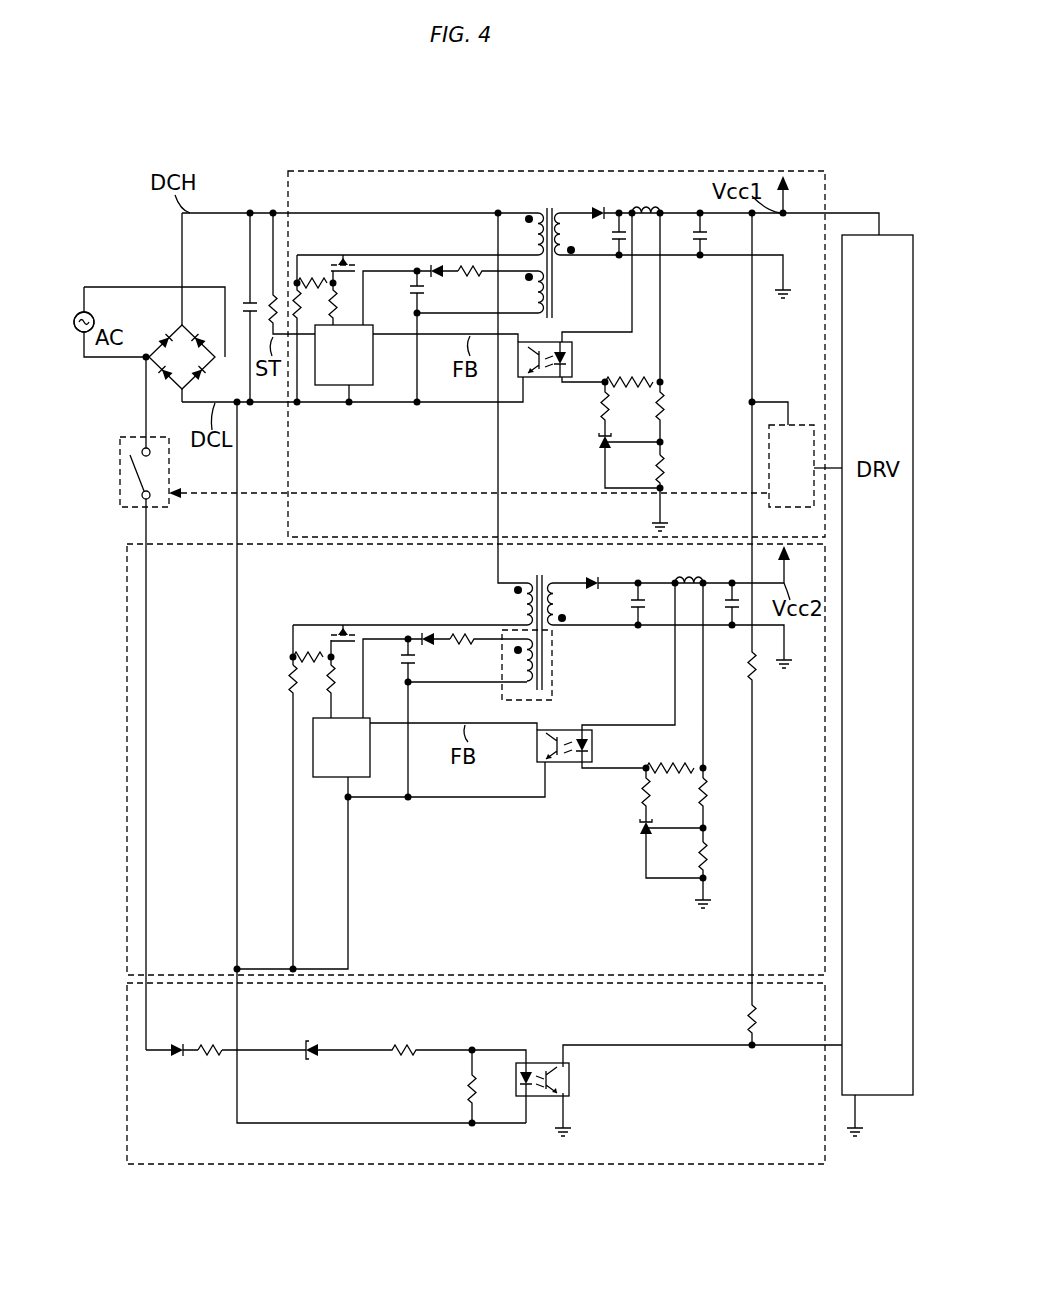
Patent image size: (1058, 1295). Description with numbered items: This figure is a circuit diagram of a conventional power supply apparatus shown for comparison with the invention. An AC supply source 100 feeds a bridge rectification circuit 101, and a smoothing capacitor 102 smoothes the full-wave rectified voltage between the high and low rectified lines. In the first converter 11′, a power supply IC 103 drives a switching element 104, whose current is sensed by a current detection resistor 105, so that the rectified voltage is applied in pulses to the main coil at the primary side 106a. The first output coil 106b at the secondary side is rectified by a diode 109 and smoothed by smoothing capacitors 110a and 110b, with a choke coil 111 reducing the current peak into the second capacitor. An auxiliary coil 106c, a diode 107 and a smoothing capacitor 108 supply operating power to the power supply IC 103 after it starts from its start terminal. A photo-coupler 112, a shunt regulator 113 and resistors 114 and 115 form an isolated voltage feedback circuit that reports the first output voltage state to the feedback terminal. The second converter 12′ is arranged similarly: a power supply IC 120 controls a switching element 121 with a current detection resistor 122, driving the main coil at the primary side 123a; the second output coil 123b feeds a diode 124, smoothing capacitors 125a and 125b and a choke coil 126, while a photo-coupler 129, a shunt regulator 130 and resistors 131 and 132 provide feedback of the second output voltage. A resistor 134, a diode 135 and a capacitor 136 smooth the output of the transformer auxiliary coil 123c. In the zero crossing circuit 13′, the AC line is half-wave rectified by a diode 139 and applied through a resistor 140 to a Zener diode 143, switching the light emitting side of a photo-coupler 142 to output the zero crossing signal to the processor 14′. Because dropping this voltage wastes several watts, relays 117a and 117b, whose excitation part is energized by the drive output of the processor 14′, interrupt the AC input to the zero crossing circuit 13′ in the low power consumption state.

The AC supply source 100 is at (92, 318).
The bridge rectification circuit 101 is at (178, 352).
The smoothing capacitor 102 is at (245, 305).
The power supply IC 103 is at (328, 385).
The switching element 104 is at (343, 255).
The current detection resistor 105 is at (297, 293).
The main coil at the primary side 106a is at (530, 235).
The Vcc1 output coil 106b is at (563, 218).
The auxiliary coil 106c is at (530, 300).
The diode 107 is at (435, 265).
The smoothing capacitor 108 is at (415, 285).
The diode 109 is at (598, 210).
The smoothing capacitor 110a is at (619, 230).
The smoothing capacitor 110b is at (700, 230).
The choke coil 111 is at (646, 205).
The photo-coupler 112 is at (545, 378).
The shunt regulator 113 is at (597, 443).
The resistor 114 is at (665, 405).
The resistor 115 is at (665, 465).
The relay 117a is at (128, 437).
The relay 117b is at (800, 425).
The power supply IC 120 is at (322, 778).
The switching element 121 is at (340, 630).
The current detection resistor 122 is at (292, 690).
The main coil at the primary side 123a is at (515, 602).
The Vcc2 output coil 123b is at (558, 630).
The transformer auxiliary coil 123c is at (515, 648).
The diode 124 is at (596, 581).
The smoothing capacitor 125a is at (640, 612).
The smoothing capacitor 125b is at (732, 600).
The choke coil 126 is at (690, 575).
The photo-coupler 129 is at (575, 765).
The shunt regulator 130 is at (640, 836).
The resistor 131 is at (710, 800).
The resistor 132 is at (710, 860).
The resistor 134 is at (462, 642).
The diode 135 is at (428, 635).
The capacitor 136 is at (408, 655).
The diode 139 is at (177, 1058).
The resistor 140 is at (212, 1056).
The photo-coupler 142 is at (572, 1080).
The Zener diode 143 is at (312, 1043).
The first converter 11′ is at (288, 170).
The second converter 12′ is at (127, 600).
The zero crossing circuit 13′ is at (163, 1165).
The CPU 14′ is at (893, 235).